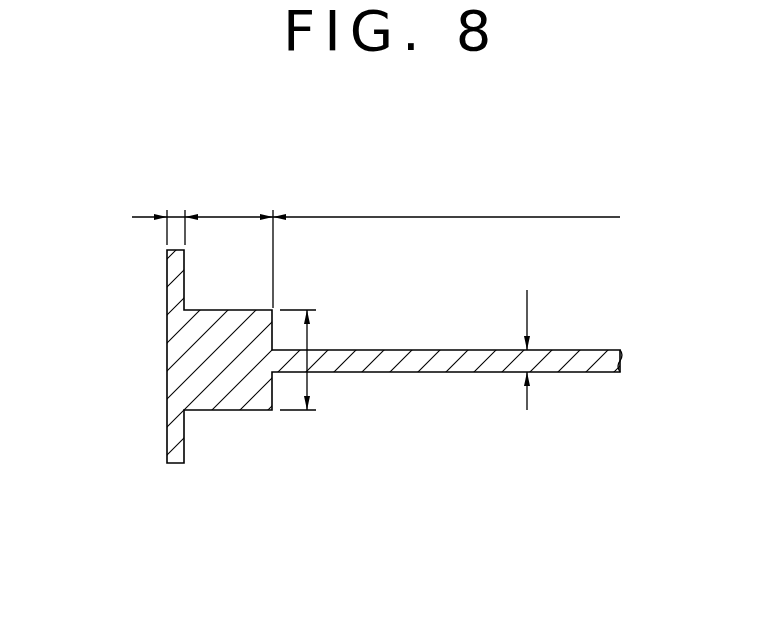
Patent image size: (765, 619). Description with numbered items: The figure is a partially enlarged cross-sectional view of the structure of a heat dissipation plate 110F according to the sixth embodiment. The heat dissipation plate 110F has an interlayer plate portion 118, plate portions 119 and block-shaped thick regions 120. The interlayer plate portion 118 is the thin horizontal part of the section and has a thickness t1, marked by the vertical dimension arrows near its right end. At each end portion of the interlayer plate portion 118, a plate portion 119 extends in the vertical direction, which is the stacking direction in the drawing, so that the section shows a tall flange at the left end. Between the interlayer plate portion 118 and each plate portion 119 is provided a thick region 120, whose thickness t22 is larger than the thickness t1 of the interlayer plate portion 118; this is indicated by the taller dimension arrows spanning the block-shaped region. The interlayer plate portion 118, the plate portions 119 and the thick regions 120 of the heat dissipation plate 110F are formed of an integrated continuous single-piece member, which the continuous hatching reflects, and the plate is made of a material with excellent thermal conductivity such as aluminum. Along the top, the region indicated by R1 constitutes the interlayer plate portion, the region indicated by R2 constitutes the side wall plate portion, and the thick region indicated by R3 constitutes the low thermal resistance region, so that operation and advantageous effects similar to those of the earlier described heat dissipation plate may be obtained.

The heat dissipation plate 110F is at (152, 477).
The interlayer plate portion 118 is at (388, 362).
The plate portion 119 is at (175, 452).
The thick region 120 is at (222, 401).
The interlayer plate portion region R1 is at (446, 203).
The side wall plate portion region R2 is at (165, 213).
The low thermal resistance region R3 is at (220, 245).
The thickness of interlayer plate portion t1 is at (540, 350).
The thickness of thick region t22 is at (308, 339).